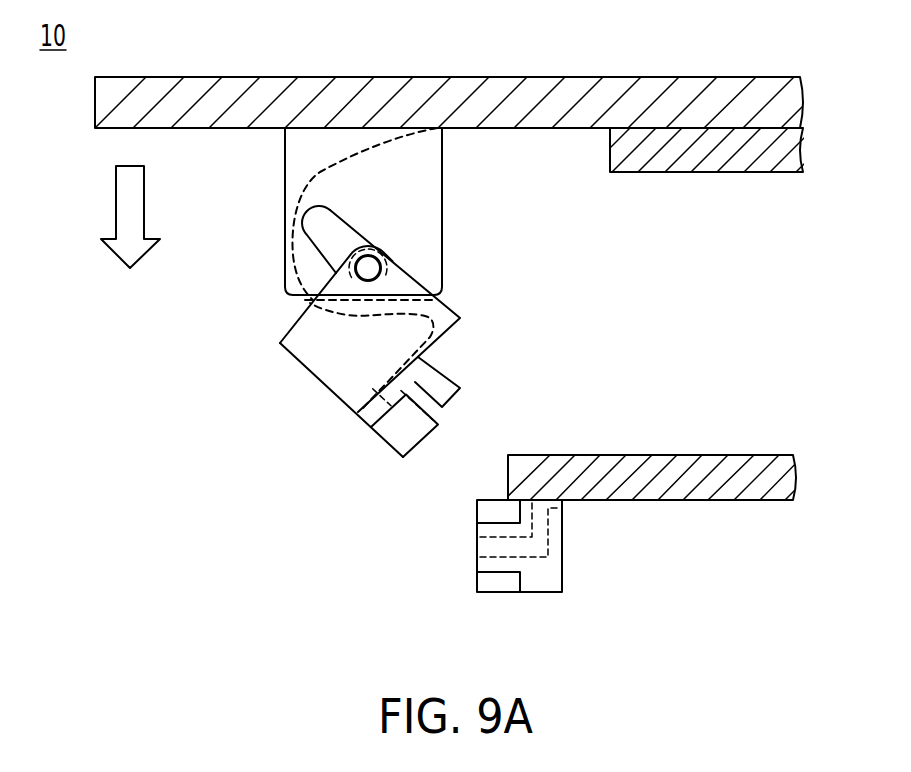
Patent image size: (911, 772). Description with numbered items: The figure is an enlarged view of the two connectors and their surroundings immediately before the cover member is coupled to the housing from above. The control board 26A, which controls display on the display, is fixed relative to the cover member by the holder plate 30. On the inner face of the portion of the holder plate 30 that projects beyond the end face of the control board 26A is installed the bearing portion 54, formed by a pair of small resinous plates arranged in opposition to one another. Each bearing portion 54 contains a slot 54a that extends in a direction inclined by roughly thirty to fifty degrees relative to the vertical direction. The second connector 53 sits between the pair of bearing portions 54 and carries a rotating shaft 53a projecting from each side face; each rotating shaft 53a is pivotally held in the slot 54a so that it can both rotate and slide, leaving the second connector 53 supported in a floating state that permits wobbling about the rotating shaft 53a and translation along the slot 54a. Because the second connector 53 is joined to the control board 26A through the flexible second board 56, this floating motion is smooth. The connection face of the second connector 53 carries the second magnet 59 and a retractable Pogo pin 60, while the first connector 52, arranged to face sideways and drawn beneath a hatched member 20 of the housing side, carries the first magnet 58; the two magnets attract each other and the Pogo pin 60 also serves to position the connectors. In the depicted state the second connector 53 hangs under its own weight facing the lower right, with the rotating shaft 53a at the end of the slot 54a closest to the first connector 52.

The frame member 20 is at (687, 463).
The control board 26A is at (725, 145).
The holder plate 30 is at (650, 85).
The first connector 52 is at (543, 578).
The second connector 53 is at (386, 433).
The rotating shaft 53a is at (372, 268).
The bearing portion 54 is at (393, 168).
The slot 54a is at (313, 230).
The second board 56 is at (333, 158).
The first magnet 58 is at (477, 580).
The second magnet 59 is at (463, 397).
The Pogo pin 60 is at (432, 432).